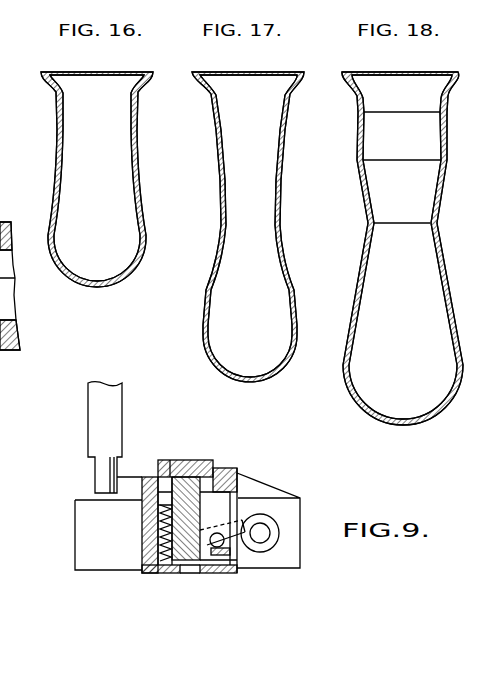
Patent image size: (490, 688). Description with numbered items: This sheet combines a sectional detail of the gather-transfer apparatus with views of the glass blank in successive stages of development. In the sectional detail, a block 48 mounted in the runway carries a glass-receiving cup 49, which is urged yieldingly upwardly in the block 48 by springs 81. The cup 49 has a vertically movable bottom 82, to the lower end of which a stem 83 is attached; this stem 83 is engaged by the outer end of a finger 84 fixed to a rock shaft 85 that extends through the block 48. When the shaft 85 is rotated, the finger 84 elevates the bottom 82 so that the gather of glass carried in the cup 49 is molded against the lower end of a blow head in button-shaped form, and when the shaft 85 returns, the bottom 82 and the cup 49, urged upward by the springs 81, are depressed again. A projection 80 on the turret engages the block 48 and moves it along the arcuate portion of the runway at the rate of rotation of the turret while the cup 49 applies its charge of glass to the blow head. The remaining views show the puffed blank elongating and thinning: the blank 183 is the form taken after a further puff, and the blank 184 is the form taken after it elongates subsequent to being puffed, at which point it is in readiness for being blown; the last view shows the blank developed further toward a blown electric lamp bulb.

In FIG. 16, the blank 183 is at (68, 279).
In FIG. 17, the blank 184 is at (229, 377).
In FIG. 9, the projection 80 is at (103, 473).
In FIG. 9, the spring 81 is at (160, 538).
In FIG. 9, the bottom 82 is at (193, 482).
In FIG. 9, the stem 83 is at (180, 560).
In FIG. 9, the finger 84 is at (246, 553).
In FIG. 9, the rock shaft 85 is at (262, 535).
In FIG. 9, the block 48 is at (278, 508).
In FIG. 9, the glass-receiving cup 49 is at (233, 477).